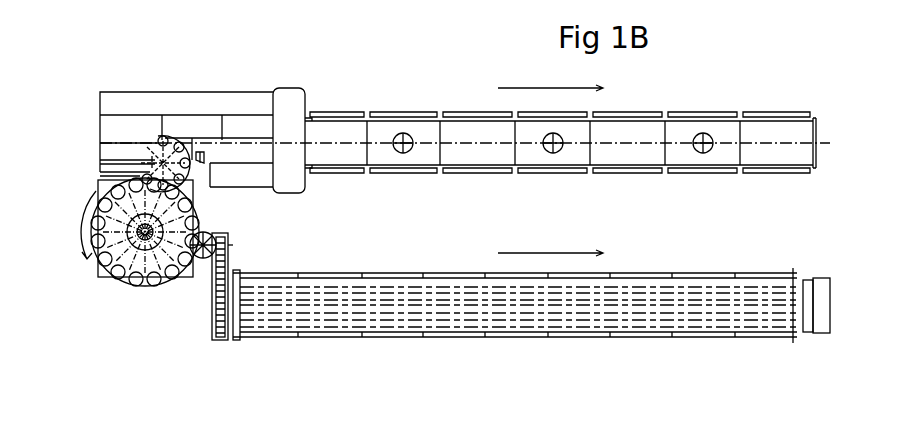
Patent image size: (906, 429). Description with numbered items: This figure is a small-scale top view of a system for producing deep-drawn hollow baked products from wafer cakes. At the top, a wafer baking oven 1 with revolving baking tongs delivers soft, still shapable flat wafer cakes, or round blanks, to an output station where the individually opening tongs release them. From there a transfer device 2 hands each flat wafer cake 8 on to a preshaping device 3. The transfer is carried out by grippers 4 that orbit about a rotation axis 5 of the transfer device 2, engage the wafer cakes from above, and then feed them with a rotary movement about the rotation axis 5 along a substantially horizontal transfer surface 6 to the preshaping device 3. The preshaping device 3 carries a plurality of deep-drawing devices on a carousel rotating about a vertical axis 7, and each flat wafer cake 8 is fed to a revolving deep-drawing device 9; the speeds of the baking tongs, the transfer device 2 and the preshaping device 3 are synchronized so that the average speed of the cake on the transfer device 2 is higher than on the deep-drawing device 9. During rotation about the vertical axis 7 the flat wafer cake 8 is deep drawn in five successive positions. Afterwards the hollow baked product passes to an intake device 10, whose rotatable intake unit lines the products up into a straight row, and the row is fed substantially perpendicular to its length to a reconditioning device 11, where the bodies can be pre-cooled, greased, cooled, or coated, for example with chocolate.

The wafer baking oven 1 is at (760, 127).
The transfer device 2 is at (197, 151).
The preshaping device 3 is at (92, 234).
The grippers 4 is at (160, 142).
The rotation axis 5 is at (152, 162).
The transfer surface 6 is at (143, 172).
The vertical axis 7 is at (100, 263).
The flat wafer cake 8 is at (178, 138).
The deep-drawing device 9 is at (153, 284).
The intake device 10 is at (213, 322).
The reconditioning device 11 is at (330, 310).